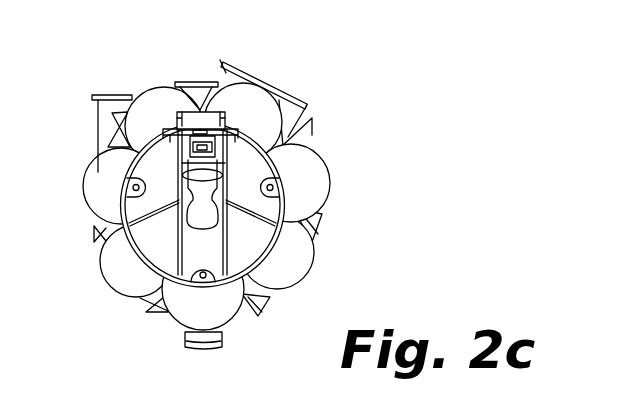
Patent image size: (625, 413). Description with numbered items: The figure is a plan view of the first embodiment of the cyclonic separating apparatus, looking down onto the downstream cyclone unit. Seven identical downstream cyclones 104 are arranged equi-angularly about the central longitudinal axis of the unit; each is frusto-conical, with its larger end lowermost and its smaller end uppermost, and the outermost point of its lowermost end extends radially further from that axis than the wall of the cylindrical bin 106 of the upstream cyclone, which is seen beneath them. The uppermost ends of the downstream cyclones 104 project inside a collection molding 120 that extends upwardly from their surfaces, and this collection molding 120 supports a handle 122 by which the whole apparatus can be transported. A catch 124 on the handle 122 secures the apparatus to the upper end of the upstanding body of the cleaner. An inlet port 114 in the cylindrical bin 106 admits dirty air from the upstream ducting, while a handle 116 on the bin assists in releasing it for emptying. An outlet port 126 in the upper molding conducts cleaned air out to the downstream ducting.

The downstream cyclone 104 is at (315, 182).
The cylindrical bin 106 is at (318, 238).
The inlet port 114 is at (108, 96).
The handle 116 is at (216, 351).
The collection molding 120 is at (163, 244).
The handle 122 is at (205, 253).
The catch 124 is at (200, 108).
The outlet port 126 is at (274, 74).